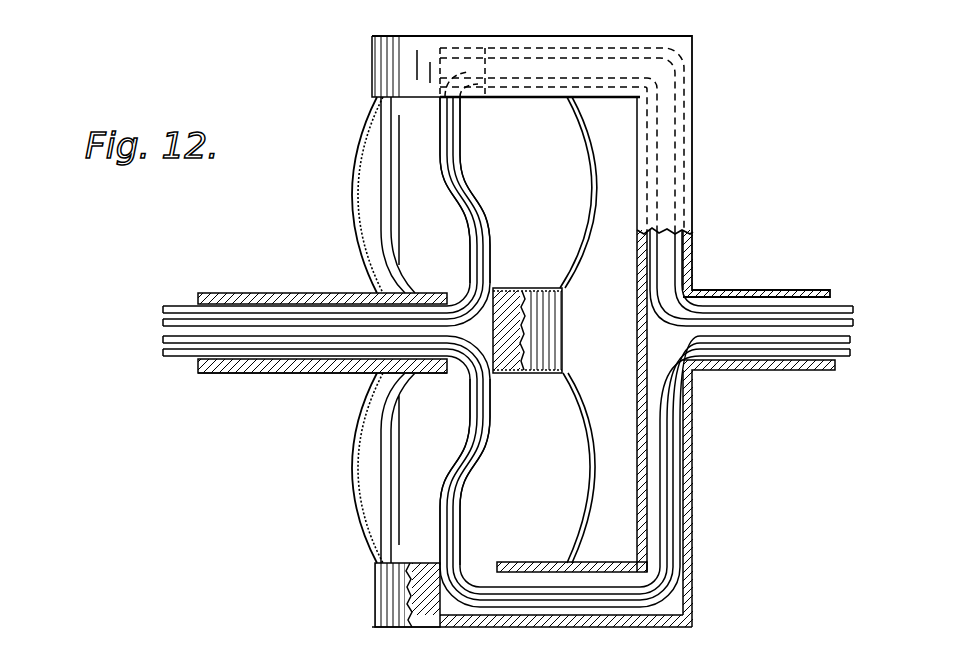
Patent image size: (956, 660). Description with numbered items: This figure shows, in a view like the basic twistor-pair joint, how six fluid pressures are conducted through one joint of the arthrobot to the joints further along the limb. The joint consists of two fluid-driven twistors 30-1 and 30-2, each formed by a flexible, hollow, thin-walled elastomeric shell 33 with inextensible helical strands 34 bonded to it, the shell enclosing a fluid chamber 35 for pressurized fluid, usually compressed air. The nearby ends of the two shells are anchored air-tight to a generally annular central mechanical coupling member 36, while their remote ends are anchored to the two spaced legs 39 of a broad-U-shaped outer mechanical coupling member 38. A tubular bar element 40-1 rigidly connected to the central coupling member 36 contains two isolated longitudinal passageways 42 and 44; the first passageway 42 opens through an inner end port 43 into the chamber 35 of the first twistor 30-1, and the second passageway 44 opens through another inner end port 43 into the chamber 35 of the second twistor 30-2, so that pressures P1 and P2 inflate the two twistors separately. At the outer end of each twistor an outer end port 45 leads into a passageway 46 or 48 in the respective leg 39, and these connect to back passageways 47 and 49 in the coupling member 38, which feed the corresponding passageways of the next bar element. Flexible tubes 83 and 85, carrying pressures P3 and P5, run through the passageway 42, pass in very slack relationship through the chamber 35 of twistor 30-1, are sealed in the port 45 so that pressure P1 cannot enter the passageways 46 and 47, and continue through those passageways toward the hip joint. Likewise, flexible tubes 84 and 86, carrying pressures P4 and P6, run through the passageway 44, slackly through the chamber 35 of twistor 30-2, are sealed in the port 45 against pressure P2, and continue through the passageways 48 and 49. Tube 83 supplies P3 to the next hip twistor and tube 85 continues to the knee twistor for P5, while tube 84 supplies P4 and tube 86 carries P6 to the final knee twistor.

The first twistor 30-1 is at (360, 135).
The second twistor 30-2 is at (345, 493).
The elastomeric shell 33 is at (352, 182).
The strands 34 is at (598, 175).
The fluid chamber 35 is at (550, 217).
The central mechanical coupling member 36 is at (573, 335).
The outer mechanical coupling member 38 is at (702, 520).
The spaced legs 39 is at (420, 628).
The bar element 40-1 is at (207, 378).
The first passageway 42 is at (345, 300).
The inner end port 43 is at (468, 280).
The second passageway 44 is at (347, 358).
The outer end port 45 is at (487, 35).
The passageway 46 is at (585, 50).
The back passageway 47 is at (680, 138).
The passageway 48 is at (622, 610).
The back passageway 49 is at (680, 473).
The flexible tube 83 is at (227, 313).
The flexible tube 84 is at (243, 352).
The flexible tube 85 is at (265, 327).
The flexible tube 86 is at (287, 340).
The fluid pressure P1 is at (104, 256).
The fluid pressure P2 is at (100, 455).
The fluid pressure P3 is at (155, 312).
The fluid pressure P4 is at (157, 355).
The fluid pressure P5 is at (157, 326).
The fluid pressure P6 is at (157, 343).